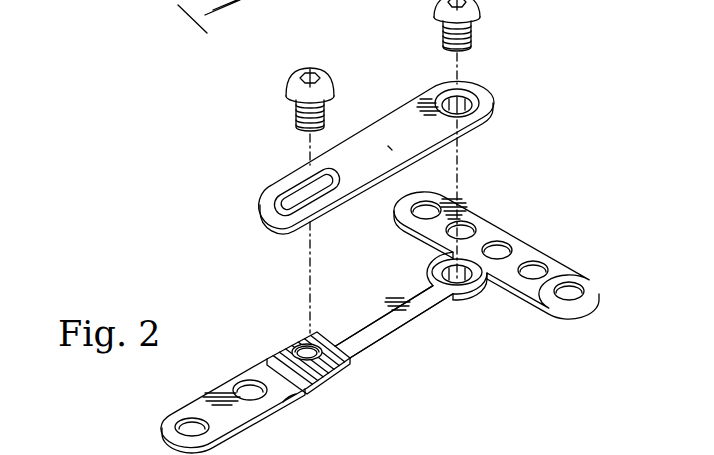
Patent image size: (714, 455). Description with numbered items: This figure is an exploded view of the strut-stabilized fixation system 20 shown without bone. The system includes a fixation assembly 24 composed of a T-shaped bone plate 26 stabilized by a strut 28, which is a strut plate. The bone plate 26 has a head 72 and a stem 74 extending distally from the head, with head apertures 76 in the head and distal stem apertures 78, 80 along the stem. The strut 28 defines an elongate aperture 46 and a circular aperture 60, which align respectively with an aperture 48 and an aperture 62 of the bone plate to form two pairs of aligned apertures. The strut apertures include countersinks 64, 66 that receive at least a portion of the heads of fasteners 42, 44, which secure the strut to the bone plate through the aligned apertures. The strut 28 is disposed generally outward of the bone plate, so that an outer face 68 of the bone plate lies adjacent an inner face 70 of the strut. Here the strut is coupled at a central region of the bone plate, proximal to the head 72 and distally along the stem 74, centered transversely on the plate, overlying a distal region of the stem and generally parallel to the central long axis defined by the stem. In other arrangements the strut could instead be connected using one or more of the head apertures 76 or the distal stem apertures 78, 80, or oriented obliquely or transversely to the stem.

The strut-stabilized fixation system 20 is at (152, 223).
The fixation assembly 24 is at (197, 233).
The bone plate 26 is at (252, 362).
The strut 28 is at (397, 110).
The fastener 42 is at (286, 86).
The fastener 44 is at (481, 5).
The elongate aperture 46 is at (293, 200).
The aperture 48 is at (303, 345).
The circular aperture 60 is at (463, 110).
The aperture 62 is at (457, 286).
The countersink 64 is at (297, 195).
The countersink 66 is at (471, 99).
The outer face 68 is at (350, 324).
The inner face 70 is at (392, 148).
The head 72 is at (512, 247).
The stem 74 is at (290, 396).
The head apertures 76 is at (577, 286).
The distal stem aperture 78 is at (246, 388).
The distal stem aperture 80 is at (188, 422).